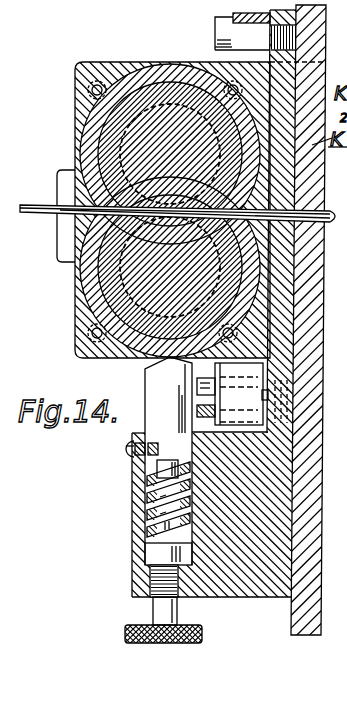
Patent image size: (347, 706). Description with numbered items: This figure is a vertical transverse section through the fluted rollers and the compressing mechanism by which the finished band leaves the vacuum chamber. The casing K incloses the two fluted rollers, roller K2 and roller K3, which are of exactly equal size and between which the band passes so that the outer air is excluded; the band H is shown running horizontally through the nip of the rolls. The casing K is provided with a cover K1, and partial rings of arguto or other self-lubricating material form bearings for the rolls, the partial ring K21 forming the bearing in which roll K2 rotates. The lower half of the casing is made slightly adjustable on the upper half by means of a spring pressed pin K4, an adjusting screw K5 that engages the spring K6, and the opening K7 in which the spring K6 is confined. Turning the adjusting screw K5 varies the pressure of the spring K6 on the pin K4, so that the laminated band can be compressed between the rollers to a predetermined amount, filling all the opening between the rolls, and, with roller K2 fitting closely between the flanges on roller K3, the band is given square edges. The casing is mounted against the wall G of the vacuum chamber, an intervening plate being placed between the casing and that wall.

The casing K is at (123, 80).
The partial ring K21 is at (182, 90).
The cover K1 is at (220, 297).
The fluted roller K2 is at (47, 139).
The roller K3 is at (57, 284).
The spring pressed pin K4 is at (133, 388).
The adjusting screw K5 is at (213, 619).
The spring K6 is at (150, 492).
The opening K7 is at (140, 468).
The wire H is at (183, 223).
The frame plate G is at (333, 424).